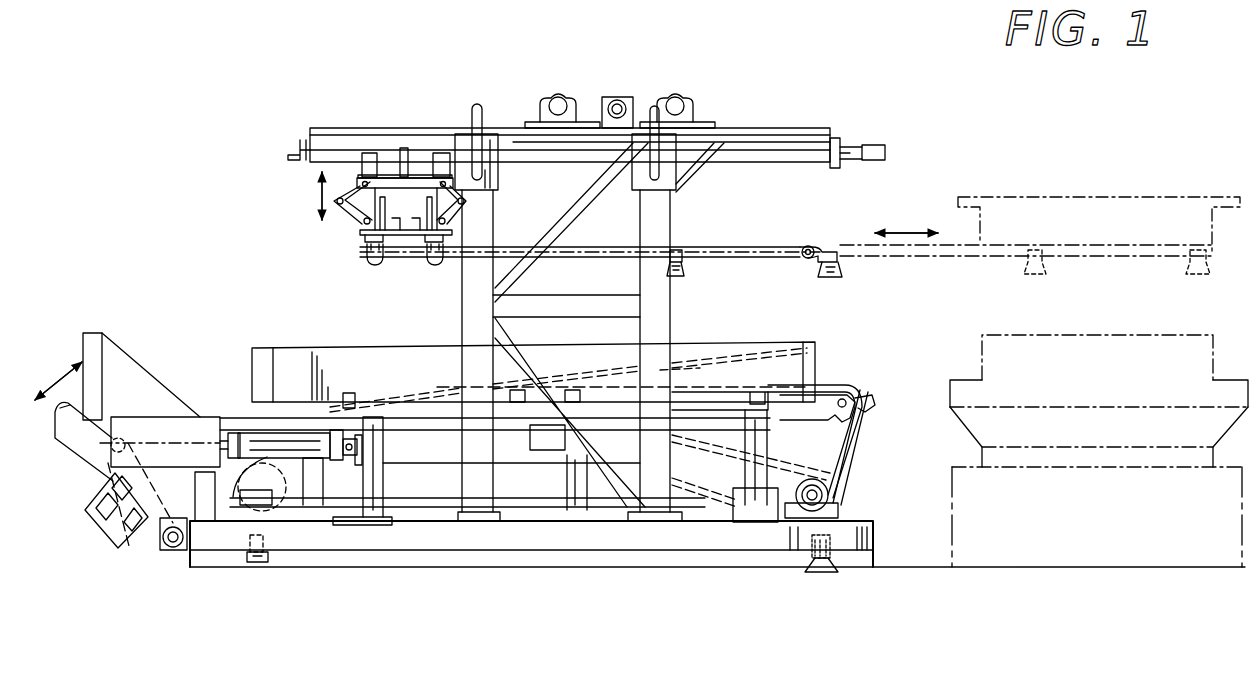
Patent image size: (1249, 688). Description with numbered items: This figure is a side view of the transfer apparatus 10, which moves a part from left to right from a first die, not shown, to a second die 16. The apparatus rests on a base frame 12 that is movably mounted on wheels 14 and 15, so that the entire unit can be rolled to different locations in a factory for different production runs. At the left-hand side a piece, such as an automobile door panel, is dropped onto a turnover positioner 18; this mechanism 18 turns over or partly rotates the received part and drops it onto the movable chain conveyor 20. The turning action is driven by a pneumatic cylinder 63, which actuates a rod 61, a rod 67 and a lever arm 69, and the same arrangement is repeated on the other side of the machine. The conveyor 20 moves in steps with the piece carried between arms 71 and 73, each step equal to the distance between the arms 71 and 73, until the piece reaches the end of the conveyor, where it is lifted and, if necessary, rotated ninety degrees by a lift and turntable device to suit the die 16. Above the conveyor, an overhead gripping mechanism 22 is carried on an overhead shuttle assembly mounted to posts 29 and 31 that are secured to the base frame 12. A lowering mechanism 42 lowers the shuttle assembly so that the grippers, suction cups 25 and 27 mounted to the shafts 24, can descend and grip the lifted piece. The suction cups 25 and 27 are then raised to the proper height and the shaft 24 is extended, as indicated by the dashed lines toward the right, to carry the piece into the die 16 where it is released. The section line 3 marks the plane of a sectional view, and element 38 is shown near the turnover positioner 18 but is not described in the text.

The transfer apparatus 10 is at (640, 69).
The base frame 12 is at (700, 541).
The wheel 14 is at (836, 560).
The wheel 15 is at (258, 564).
The second die 16 is at (1172, 300).
The turnover positioner 18 is at (70, 325).
The chain conveyor 20 is at (383, 381).
The overhead gripping mechanism 22 is at (718, 105).
The shaft 24 is at (742, 250).
The suction cup 25 is at (676, 268).
The suction cup 27 is at (838, 270).
The post 29 is at (480, 500).
The post 31 is at (652, 502).
The guide plate 38 is at (118, 345).
The lowering mechanism 42 is at (300, 224).
The rod 61 is at (170, 543).
The pneumatic cylinder 63 is at (256, 440).
The rod 67 is at (146, 442).
The lever arm 69 is at (147, 533).
The arm 71 is at (412, 383).
The arm 73 is at (672, 370).
The section line 3- 3 is at (90, 450).